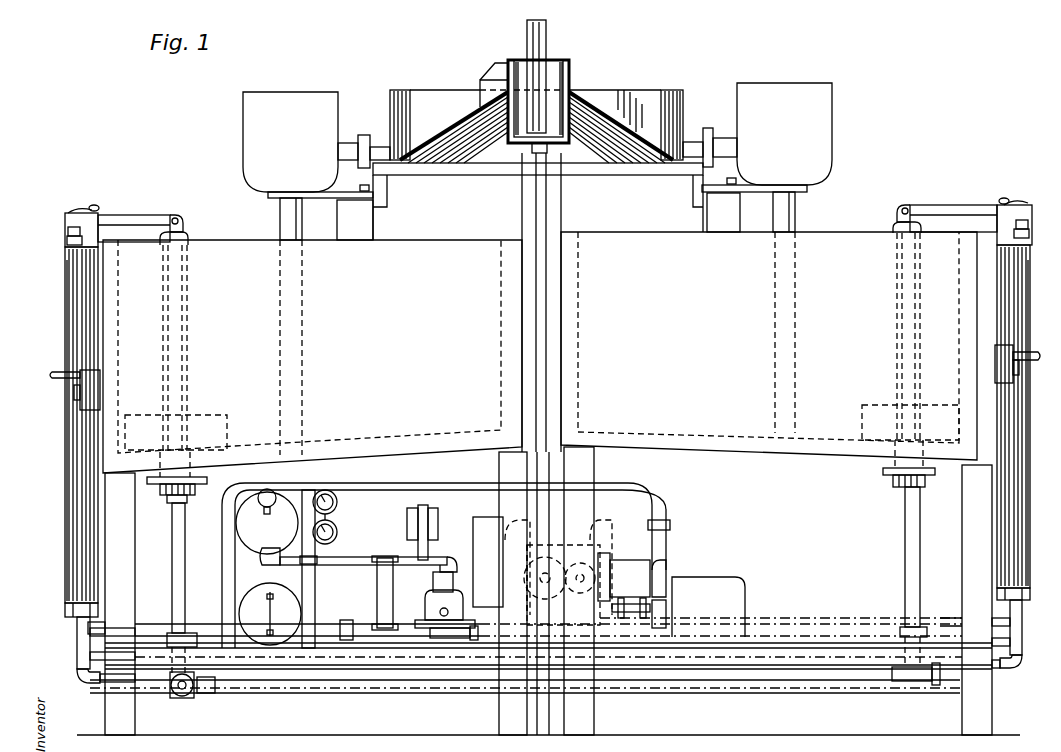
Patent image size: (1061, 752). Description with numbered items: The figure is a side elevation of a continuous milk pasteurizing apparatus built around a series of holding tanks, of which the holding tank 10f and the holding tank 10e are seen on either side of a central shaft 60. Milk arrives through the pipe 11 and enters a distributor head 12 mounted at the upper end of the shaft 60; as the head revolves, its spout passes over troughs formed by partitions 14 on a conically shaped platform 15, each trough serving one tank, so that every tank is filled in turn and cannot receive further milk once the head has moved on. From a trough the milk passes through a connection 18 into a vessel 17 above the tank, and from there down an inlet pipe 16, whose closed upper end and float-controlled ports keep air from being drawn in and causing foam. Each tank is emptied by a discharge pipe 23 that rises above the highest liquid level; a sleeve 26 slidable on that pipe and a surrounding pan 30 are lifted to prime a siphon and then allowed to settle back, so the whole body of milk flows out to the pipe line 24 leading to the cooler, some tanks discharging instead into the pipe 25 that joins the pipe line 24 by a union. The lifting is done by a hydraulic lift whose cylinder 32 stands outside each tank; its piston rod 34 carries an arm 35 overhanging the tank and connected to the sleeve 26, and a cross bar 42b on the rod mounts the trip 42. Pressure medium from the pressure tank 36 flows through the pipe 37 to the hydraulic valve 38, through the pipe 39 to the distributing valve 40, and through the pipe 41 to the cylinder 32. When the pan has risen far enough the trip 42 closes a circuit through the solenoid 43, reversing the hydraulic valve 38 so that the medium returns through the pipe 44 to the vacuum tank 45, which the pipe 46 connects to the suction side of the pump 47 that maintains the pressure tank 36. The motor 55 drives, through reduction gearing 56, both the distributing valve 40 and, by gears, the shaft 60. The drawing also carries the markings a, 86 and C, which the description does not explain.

The pipe 11 is at (548, 37).
The distributor head 12 is at (568, 68).
The partitions 14 is at (436, 100).
The conically shaped platform 15 is at (470, 125).
The inlet pipe 16 is at (281, 226).
The vessel 17 is at (306, 100).
The connection 18 is at (366, 142).
The shaft 60 is at (548, 183).
The holding tank 10f is at (312, 356).
The holding tank 10e is at (769, 346).
The sleeve 26 is at (189, 315).
The pan 30 is at (218, 414).
The piston rod 34 is at (72, 211).
The arm 35 is at (140, 218).
The cross bar 42b is at (66, 237).
The cylinder 32 is at (66, 455).
The trip 42 is at (64, 522).
The rod a is at (546, 430).
The brackets 86 is at (78, 398).
The pipe 37 is at (350, 637).
The discharge pipe 23 is at (174, 526).
The pipe line 24 is at (180, 697).
The pipe 41 is at (141, 633).
The pipe 25 is at (911, 587).
The vacuum tank 45 is at (267, 521).
The pressure tank 36 is at (270, 614).
The pipe 44 is at (400, 562).
The pipe 46 is at (378, 604).
The solenoid 43 is at (423, 510).
The hydraulic valve 38 is at (450, 597).
The pipe 39 is at (478, 640).
The casing C is at (473, 533).
The distributing valve 40 is at (560, 552).
The reduction gearing 56 is at (610, 562).
The pump 47 is at (627, 570).
The motor 55 is at (708, 607).